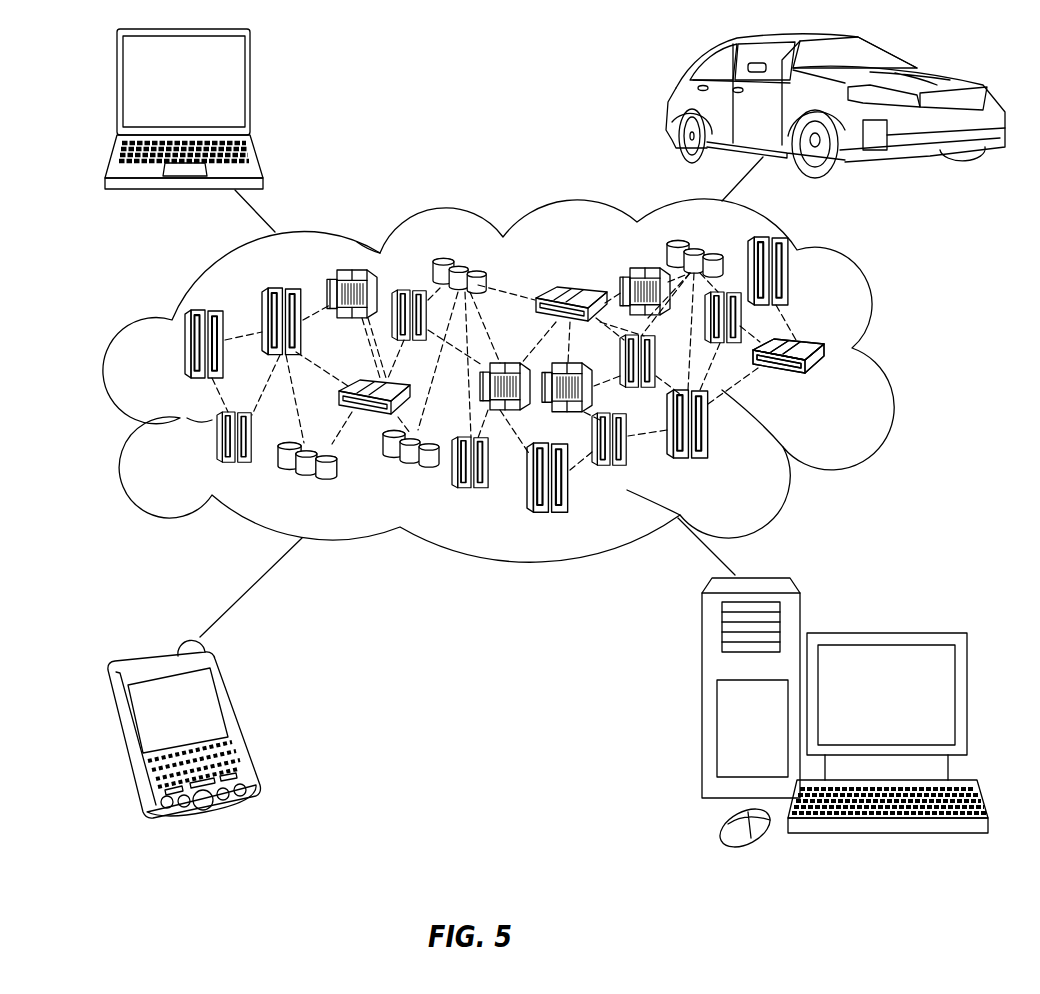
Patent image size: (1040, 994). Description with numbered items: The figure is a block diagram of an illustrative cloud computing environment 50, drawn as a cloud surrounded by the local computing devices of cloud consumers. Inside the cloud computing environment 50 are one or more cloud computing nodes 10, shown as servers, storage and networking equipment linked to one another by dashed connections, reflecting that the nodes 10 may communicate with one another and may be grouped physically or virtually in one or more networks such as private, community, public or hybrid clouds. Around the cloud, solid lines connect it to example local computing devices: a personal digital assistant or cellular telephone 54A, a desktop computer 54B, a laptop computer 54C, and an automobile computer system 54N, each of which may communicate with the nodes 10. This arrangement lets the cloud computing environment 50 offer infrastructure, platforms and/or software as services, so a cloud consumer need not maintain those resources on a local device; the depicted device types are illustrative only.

The cloud computing node 10 is at (830, 383).
The cloud computing environment 50 is at (885, 353).
The personal digital assistant or cellular telephone 54A is at (240, 723).
The desktop computer 54B is at (883, 633).
The laptop computer 54C is at (250, 88).
The automobile computer system 54N is at (674, 104).